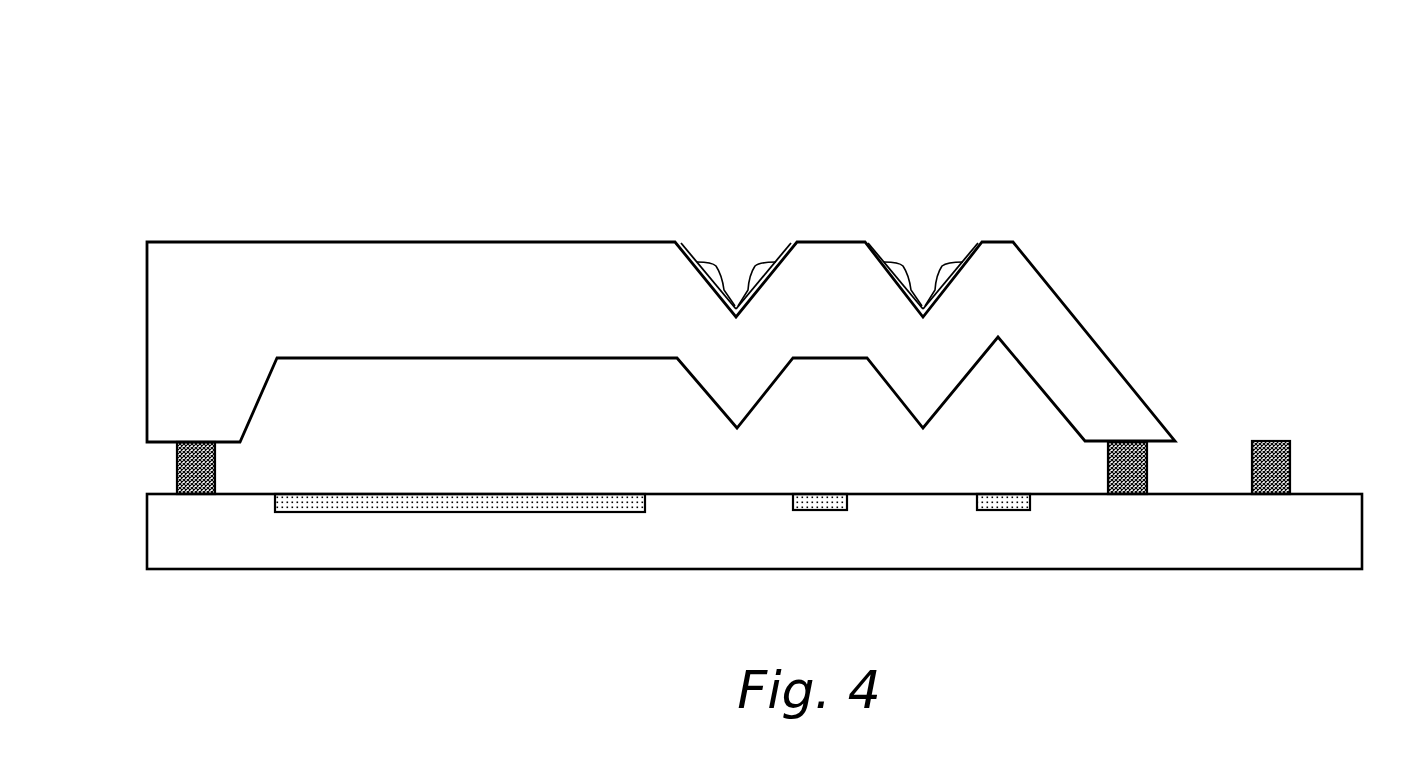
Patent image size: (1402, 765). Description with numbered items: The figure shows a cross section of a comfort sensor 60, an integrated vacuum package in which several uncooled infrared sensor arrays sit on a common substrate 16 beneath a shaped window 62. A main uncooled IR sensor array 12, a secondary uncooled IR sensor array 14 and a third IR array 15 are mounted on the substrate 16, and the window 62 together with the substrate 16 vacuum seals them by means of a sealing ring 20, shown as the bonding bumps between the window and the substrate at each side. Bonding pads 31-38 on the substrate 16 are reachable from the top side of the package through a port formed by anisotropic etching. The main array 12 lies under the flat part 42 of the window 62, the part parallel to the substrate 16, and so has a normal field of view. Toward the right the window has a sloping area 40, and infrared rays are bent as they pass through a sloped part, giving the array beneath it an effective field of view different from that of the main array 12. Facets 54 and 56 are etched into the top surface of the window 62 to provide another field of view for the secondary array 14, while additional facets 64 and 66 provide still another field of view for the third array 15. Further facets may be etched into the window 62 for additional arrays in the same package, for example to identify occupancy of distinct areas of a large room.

The sensor 60 is at (718, 122).
The window 62 is at (368, 295).
The flat part of window 42 is at (675, 232).
The sloping area of top cap 40 is at (1189, 437).
The facet 64 is at (713, 262).
The facet 66 is at (754, 262).
The facet 54 is at (900, 262).
The facet 56 is at (941, 262).
The sealing ring 20 is at (172, 474).
The bonding pads 31-38 is at (1275, 440).
The main uncooled IR sensor array 12 is at (455, 494).
The secondary uncooled IR sensor array 14 is at (990, 494).
The third IR array 15 is at (805, 494).
The substrate 16 is at (1330, 556).